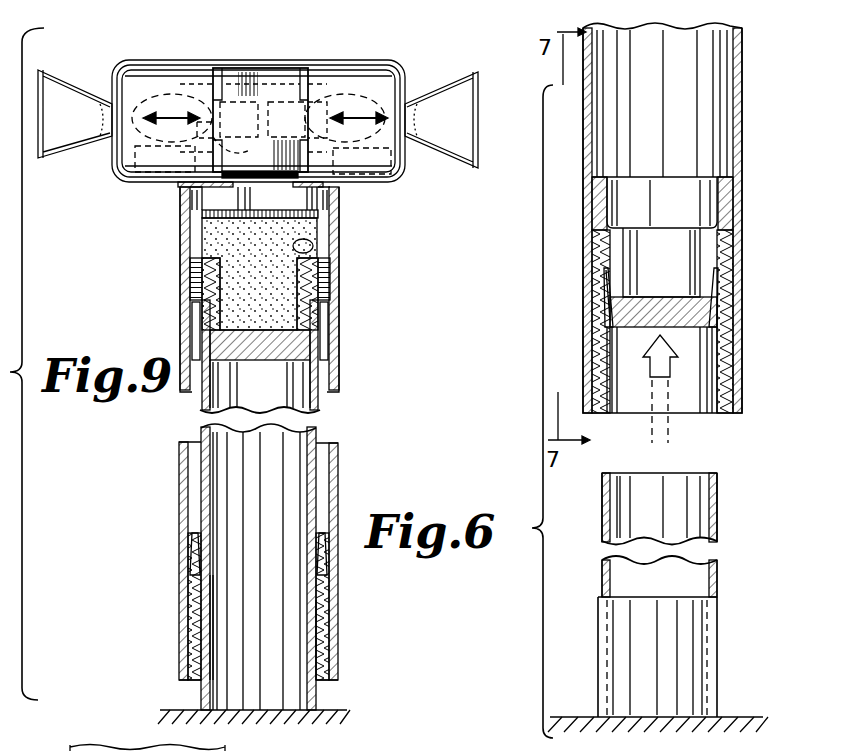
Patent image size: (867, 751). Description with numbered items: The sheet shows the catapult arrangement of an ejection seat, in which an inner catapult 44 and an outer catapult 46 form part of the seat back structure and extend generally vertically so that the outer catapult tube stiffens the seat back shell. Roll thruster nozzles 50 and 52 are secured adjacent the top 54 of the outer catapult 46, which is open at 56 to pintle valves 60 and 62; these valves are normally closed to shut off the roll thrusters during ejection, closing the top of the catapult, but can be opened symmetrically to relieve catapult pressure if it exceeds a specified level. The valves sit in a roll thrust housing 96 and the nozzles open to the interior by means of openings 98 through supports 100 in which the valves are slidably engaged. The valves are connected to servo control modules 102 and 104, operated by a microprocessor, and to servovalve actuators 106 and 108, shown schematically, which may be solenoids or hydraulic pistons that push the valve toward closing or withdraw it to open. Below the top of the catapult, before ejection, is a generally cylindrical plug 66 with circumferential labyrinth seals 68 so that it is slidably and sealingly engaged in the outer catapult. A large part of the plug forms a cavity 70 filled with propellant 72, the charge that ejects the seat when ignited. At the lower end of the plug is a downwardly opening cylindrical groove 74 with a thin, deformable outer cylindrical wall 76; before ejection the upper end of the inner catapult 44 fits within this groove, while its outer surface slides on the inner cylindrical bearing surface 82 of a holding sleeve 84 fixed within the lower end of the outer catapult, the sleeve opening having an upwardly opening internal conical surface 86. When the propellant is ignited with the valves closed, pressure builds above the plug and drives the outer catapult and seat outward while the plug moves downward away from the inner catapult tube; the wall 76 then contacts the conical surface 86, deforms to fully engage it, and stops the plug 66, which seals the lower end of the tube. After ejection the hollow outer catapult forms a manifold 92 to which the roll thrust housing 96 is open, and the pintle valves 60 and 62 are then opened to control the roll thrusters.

In FIG. 9, the inner catapult 44 is at (318, 410).
In FIG. 6, the inner catapult 44 is at (717, 663).
In FIG. 9, the outer catapult 46 is at (339, 334).
In FIG. 6, the outer catapult 46 is at (740, 354).
In FIG. 9, the roll thruster nozzle 50 is at (60, 84).
In FIG. 9, the roll thruster nozzle 52 is at (464, 86).
In FIG. 9, the top of outer catapult 54 is at (330, 200).
In FIG. 9, the opening 56 is at (247, 190).
In FIG. 9, the pintle valve 60 is at (141, 108).
In FIG. 9, the pintle valve 62 is at (395, 102).
In FIG. 9, the plug 66 is at (264, 346).
In FIG. 6, the plug 66 is at (624, 413).
In FIG. 9, the labyrinth seals 68 is at (330, 282).
In FIG. 9, the cavity 70 is at (313, 246).
In FIG. 6, the cavity 70 is at (607, 200).
In FIG. 9, the propellant 72 is at (270, 293).
In FIG. 9, the groove 74 is at (196, 333).
In FIG. 6, the groove 74 is at (721, 272).
In FIG. 9, the outer cylindrical wall 76 is at (328, 368).
In FIG. 6, the outer cylindrical wall 76 is at (720, 308).
In FIG. 9, the inner cylindrical bearing surface 82 is at (208, 592).
In FIG. 9, the holding sleeve 84 is at (318, 650).
In FIG. 9, the internal conical surface 86 is at (200, 530).
In FIG. 6, the internal conical surface 86 is at (600, 297).
In FIG. 6, the manifold 92 is at (697, 82).
In FIG. 9, the roll thrust housing 96 is at (256, 68).
In FIG. 9, the openings 98 is at (259, 134).
In FIG. 9, the supports 100 is at (230, 72).
In FIG. 9, the servo control module 102 is at (142, 186).
In FIG. 9, the servo control module 104 is at (388, 182).
In FIG. 9, the servovalve actuator 106 is at (172, 116).
In FIG. 9, the servovalve actuator 108 is at (352, 116).